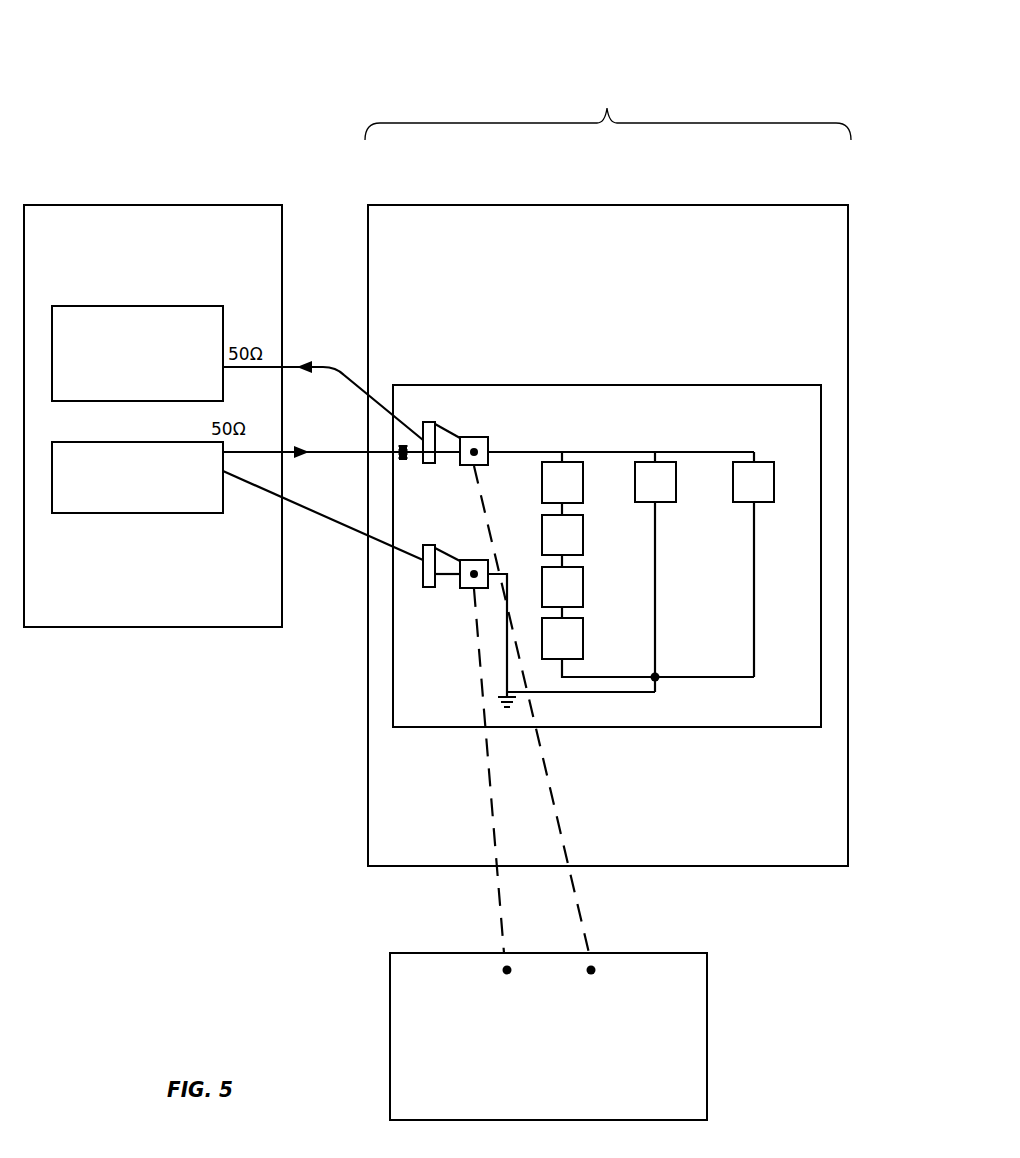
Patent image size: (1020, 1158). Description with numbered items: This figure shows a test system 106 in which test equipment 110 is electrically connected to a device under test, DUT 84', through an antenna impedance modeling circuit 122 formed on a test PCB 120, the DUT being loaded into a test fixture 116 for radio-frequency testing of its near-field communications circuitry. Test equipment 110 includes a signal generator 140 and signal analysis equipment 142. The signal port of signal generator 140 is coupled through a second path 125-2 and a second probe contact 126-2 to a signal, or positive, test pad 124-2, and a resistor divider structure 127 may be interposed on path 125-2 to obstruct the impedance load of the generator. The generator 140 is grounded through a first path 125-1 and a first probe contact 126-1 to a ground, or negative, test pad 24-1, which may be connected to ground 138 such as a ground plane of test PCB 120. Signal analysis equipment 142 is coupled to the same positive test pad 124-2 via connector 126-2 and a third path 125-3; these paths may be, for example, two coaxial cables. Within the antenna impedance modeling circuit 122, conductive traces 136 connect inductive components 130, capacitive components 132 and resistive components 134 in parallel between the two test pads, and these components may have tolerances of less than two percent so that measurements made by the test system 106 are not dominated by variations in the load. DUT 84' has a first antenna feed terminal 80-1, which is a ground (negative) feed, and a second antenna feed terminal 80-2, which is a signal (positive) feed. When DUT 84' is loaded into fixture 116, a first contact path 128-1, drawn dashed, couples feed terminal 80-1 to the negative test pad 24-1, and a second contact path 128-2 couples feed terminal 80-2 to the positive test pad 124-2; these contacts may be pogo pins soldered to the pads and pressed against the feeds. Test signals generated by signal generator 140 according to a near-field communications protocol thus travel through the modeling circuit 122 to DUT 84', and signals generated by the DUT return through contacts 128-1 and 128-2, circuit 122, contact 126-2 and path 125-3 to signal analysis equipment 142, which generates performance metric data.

The test system 106 is at (427, 68).
The test equipment 110 is at (133, 205).
The signal analysis equipment 142 is at (151, 306).
The signal generator 140 is at (151, 513).
The test fixture 116 is at (608, 116).
The test PCB 120 is at (650, 205).
The antenna impedance modeling circuit 122 is at (780, 385).
The first path 125-1 is at (331, 519).
The second path 125-2 is at (328, 455).
The third path 125-3 is at (316, 366).
The first probe contact 126-1 is at (423, 577).
The second probe contact 126-2 is at (429, 422).
The resistor divider structure 127 is at (404, 478).
The second conductive test pad 124-2 is at (488, 441).
The first conductive test pad 24-1 is at (471, 590).
The conductive traces 136 is at (622, 448).
The inductive components 130 is at (583, 537).
The capacitive components 132 is at (665, 503).
The resistive components 134 is at (764, 503).
The ground 138 is at (506, 722).
The first contact path 128-1 is at (492, 804).
The second contact path 128-2 is at (556, 793).
The DUT 84' is at (574, 1036).
The first antenna feed terminal 80-1 is at (507, 975).
The second antenna feed terminal 80-2 is at (591, 975).